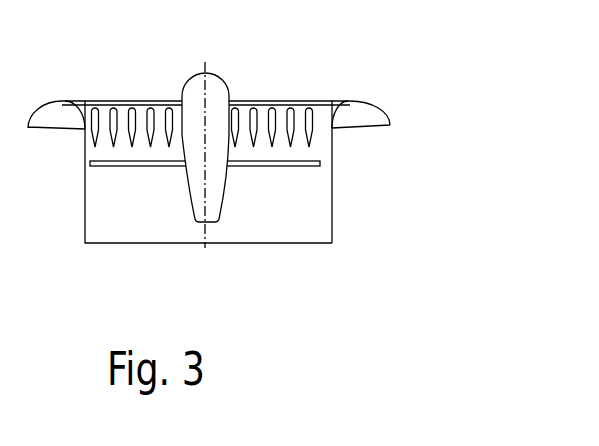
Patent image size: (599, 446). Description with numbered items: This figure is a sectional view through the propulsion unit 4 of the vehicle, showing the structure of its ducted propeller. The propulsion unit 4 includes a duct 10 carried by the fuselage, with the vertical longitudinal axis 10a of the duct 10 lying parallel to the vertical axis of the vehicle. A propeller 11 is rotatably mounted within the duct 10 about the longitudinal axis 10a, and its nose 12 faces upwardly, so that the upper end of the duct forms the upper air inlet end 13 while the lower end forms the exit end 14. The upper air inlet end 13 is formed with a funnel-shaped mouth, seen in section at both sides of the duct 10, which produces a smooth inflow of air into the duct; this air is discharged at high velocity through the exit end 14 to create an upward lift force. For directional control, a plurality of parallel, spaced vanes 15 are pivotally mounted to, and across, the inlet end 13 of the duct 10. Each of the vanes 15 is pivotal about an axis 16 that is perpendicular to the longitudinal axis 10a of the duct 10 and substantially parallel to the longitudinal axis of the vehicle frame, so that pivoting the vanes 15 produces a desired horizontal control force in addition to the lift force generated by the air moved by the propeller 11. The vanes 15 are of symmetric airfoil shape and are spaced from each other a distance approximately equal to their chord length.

The propulsion unit 4 is at (353, 88).
The duct 10 is at (82, 228).
The longitudinal axis of the duct 10a is at (207, 232).
The propeller 11 is at (97, 170).
The nose 12 is at (217, 96).
The upper air inlet end 13 is at (82, 108).
The exit end 14 is at (307, 245).
The vanes 15 is at (110, 112).
The axis 16 is at (310, 112).